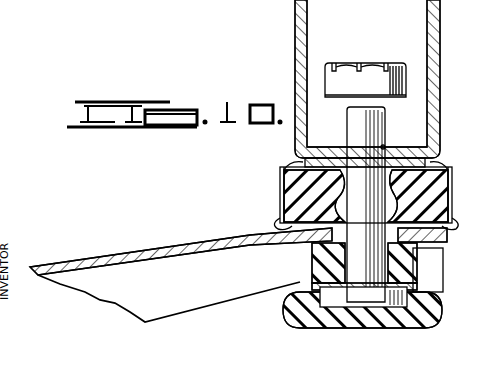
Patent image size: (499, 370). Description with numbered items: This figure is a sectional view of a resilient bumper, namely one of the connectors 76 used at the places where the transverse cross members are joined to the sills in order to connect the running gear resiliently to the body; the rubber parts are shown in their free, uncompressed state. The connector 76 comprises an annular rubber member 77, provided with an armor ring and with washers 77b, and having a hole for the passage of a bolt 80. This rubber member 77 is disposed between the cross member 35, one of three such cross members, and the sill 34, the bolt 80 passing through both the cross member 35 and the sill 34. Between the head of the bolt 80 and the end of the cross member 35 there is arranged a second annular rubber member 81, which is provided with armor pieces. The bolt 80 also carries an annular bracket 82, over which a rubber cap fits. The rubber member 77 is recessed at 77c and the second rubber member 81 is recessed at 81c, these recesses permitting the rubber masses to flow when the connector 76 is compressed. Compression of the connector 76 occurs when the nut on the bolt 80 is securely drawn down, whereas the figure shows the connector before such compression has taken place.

The sill 34 is at (431, 33).
The bolt 80 is at (386, 123).
The annular rubber member 77 is at (290, 180).
The washers 77b is at (300, 165).
The recess 77c is at (438, 166).
The connector 76 is at (453, 180).
The second annular rubber member 81 is at (447, 236).
The recess 81c is at (320, 283).
The annular bracket 82 is at (442, 318).
The cross member 35 is at (118, 255).